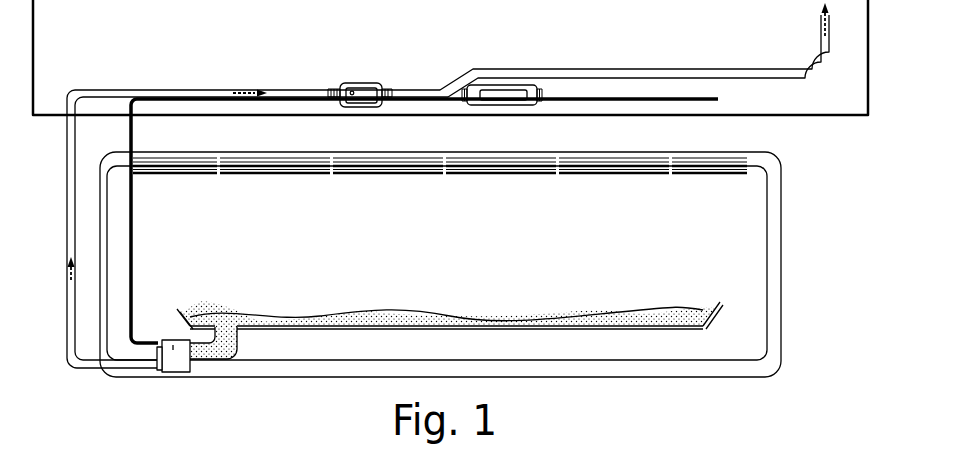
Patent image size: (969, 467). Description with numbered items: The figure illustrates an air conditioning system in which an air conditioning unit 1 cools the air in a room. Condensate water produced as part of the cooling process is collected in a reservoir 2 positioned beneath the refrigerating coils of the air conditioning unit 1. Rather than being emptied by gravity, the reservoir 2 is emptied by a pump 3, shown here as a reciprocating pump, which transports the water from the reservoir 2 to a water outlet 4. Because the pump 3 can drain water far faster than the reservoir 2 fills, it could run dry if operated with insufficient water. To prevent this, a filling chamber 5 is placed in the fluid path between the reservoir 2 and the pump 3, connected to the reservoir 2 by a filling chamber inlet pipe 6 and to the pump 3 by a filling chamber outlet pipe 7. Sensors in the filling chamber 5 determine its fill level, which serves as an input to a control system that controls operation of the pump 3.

The air conditioning unit 1 is at (794, 270).
The reservoir 2 is at (714, 333).
The pump 3 is at (363, 70).
The water outlet 4 is at (592, 68).
The filling chamber 5 is at (176, 384).
The filling chamber inlet pipe 6 is at (230, 352).
The filling chamber outlet pipe 7 is at (75, 90).